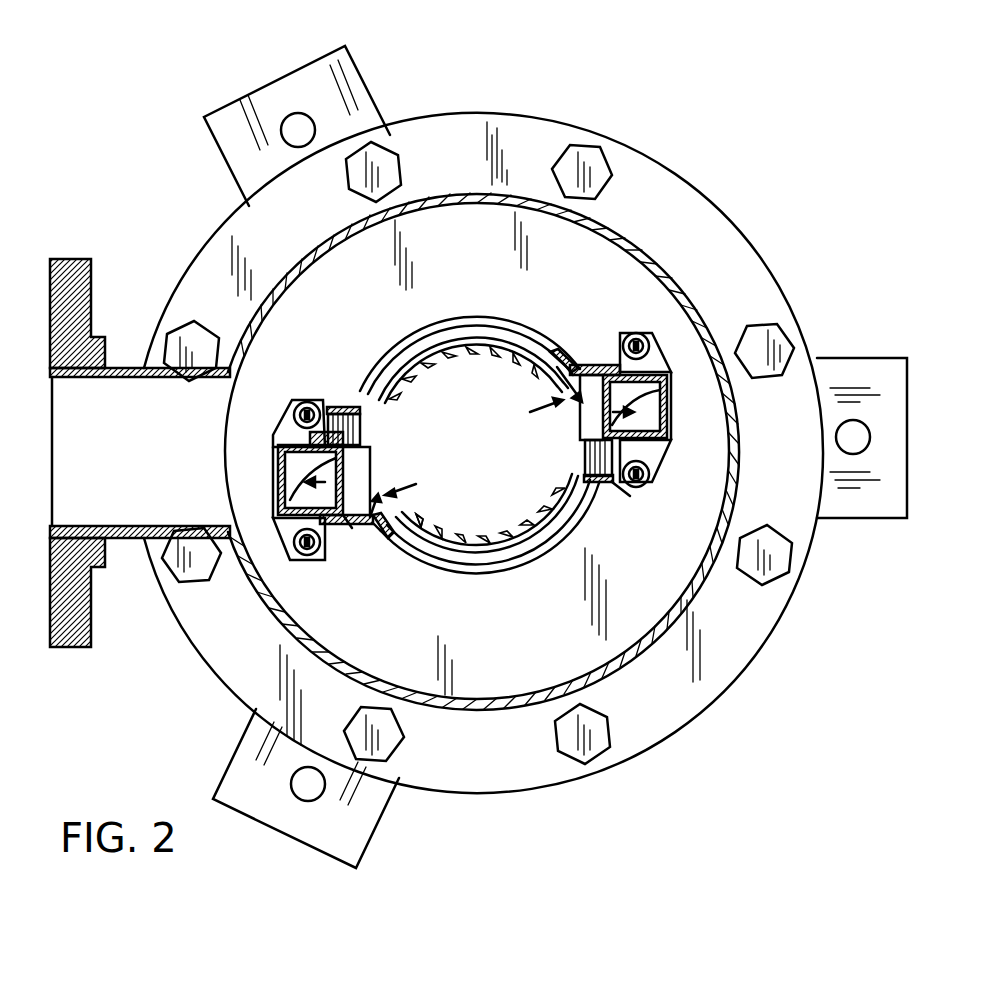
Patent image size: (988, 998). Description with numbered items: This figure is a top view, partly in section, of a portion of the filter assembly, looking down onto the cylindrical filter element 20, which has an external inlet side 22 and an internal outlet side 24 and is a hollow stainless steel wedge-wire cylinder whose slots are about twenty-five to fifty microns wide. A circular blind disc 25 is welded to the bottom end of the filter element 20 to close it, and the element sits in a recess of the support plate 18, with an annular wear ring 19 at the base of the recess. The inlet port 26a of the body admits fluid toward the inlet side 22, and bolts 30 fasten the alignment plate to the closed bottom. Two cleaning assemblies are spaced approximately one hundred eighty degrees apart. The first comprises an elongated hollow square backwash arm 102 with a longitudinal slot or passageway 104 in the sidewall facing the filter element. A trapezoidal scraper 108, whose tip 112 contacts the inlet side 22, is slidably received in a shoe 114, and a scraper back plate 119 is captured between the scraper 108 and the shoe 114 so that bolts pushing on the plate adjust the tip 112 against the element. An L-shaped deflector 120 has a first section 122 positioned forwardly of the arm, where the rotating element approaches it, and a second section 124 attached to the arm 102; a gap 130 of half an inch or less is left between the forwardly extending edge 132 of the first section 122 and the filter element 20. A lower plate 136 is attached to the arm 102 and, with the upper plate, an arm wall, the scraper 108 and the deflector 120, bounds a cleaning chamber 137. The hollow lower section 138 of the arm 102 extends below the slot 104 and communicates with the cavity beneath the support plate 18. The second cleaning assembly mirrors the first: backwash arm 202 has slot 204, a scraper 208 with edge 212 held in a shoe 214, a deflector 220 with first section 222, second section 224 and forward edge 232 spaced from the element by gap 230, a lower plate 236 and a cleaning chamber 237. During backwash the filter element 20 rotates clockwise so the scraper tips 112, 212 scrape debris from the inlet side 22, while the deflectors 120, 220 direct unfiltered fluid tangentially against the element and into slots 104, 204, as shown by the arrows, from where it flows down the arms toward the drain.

The wear ring 19 is at (446, 228).
The support plate 18 is at (598, 262).
The bolts 30 is at (762, 330).
The inlet port 26a is at (236, 400).
The filter element 20 is at (439, 323).
The external inlet side 22 is at (413, 350).
The blind disc 25 is at (501, 368).
The gap 230 is at (525, 333).
The internal outlet side 24 is at (470, 348).
The gap 130 is at (437, 547).
The slot 104 is at (283, 520).
The scraper back plate 119 is at (325, 430).
The backwash arm 102 is at (332, 562).
The cleaning chamber 137 is at (337, 458).
The hollow lower section 138 is at (290, 483).
The shoe 114 is at (342, 407).
The scraper 108 is at (366, 425).
The scraper tip 112 is at (372, 447).
The lower plate 136 is at (385, 472).
The deflector 120 is at (388, 537).
The first section 122 is at (390, 542).
The second section 124 is at (352, 528).
The forwardly extending edge 132 is at (398, 543).
The backwash arm 202 is at (670, 440).
The scraper edge 212 is at (615, 423).
The slot 204 is at (625, 402).
The first section 222 is at (577, 360).
The deflector 220 is at (581, 366).
The second section 224 is at (598, 366).
The forwardly extending edge 232 is at (531, 380).
The scraper 208 is at (597, 485).
The shoe 214 is at (618, 495).
The lower plate 236 is at (570, 418).
The cleaning chamber 237 is at (580, 418).